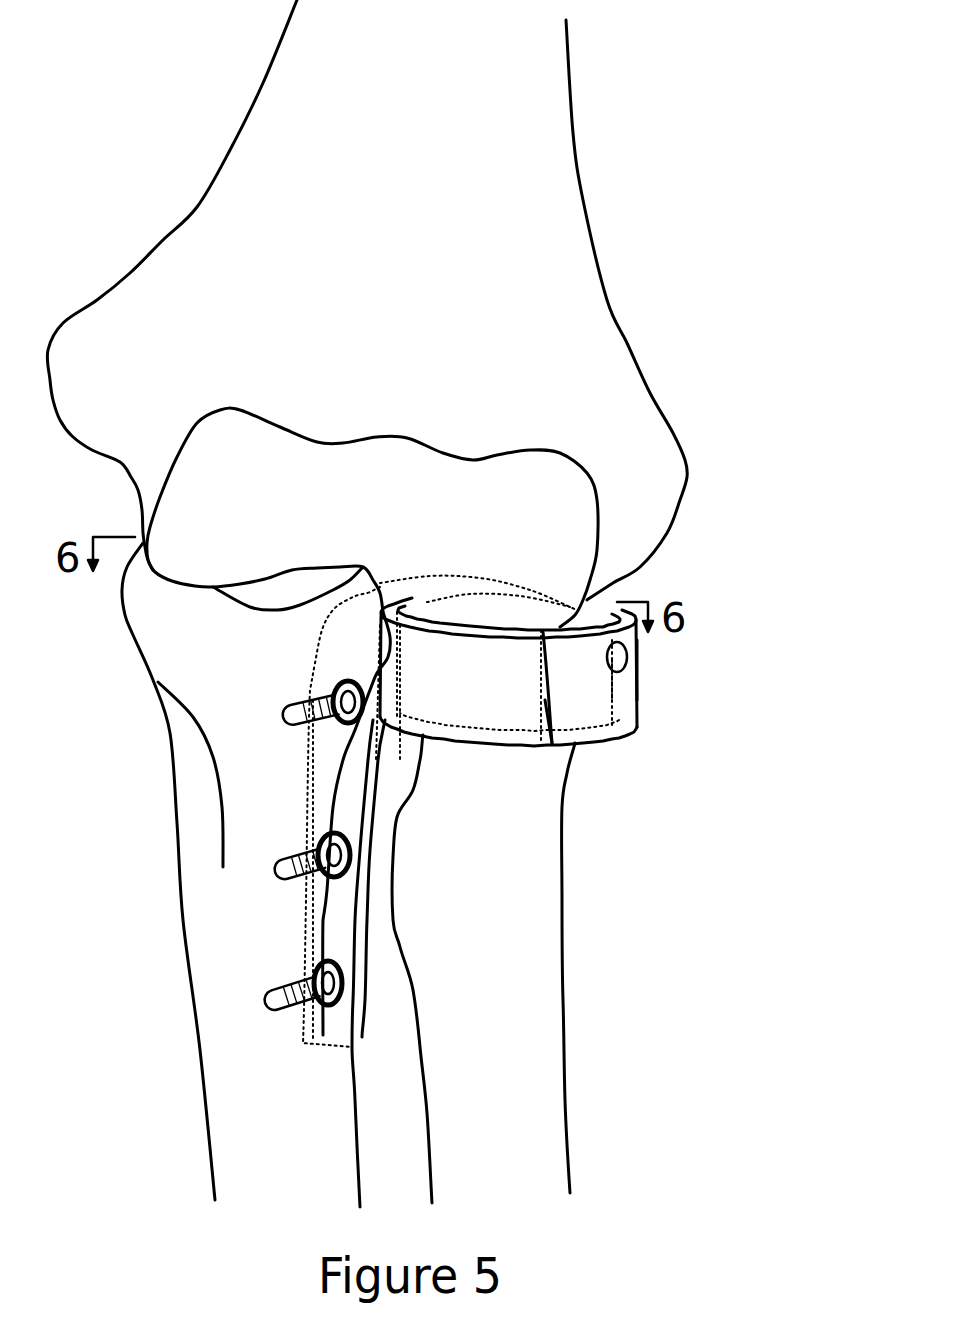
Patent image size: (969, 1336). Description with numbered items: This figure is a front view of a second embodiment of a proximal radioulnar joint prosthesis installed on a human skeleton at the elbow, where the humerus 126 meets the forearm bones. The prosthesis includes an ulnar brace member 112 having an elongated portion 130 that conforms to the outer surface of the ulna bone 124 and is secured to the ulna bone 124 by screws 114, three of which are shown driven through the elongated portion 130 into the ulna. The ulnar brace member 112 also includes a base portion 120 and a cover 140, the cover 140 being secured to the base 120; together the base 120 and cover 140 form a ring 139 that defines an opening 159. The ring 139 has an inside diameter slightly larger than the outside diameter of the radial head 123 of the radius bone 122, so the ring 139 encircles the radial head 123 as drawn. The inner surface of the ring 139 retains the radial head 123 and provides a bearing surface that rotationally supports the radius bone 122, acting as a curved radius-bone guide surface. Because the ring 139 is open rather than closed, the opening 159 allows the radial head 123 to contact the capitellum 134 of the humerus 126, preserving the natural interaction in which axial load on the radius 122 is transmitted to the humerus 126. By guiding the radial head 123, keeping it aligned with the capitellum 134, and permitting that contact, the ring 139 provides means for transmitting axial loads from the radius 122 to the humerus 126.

The ulnar brace member 112 is at (300, 778).
The screws 114 is at (272, 882).
The base portion 120 is at (485, 743).
The radius bone 122 is at (547, 1125).
The radial head 123 is at (592, 688).
The ulna bone 124 is at (240, 1158).
The humerus 126 is at (583, 203).
The elongated portion 130 is at (330, 1025).
The capitellum 134 is at (550, 530).
The ring 139 is at (523, 743).
The cover 140 is at (630, 710).
The opening 159 is at (607, 593).